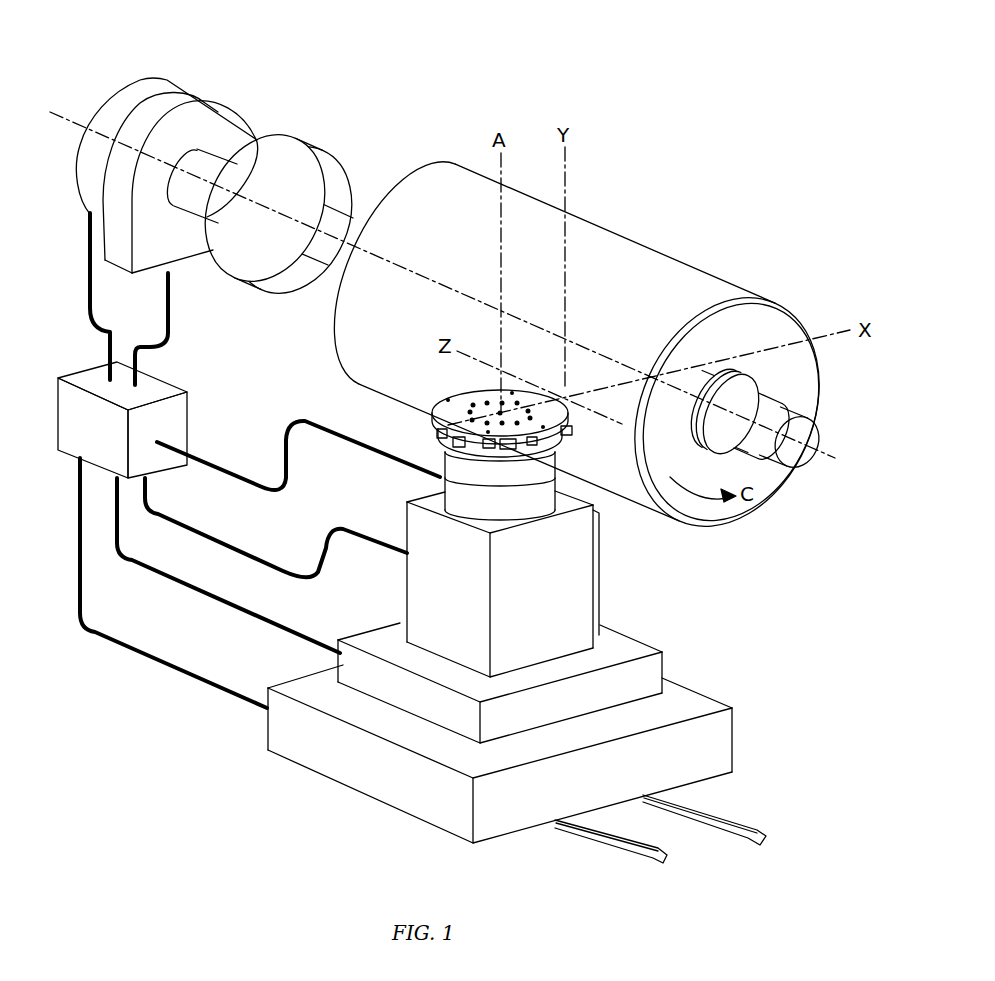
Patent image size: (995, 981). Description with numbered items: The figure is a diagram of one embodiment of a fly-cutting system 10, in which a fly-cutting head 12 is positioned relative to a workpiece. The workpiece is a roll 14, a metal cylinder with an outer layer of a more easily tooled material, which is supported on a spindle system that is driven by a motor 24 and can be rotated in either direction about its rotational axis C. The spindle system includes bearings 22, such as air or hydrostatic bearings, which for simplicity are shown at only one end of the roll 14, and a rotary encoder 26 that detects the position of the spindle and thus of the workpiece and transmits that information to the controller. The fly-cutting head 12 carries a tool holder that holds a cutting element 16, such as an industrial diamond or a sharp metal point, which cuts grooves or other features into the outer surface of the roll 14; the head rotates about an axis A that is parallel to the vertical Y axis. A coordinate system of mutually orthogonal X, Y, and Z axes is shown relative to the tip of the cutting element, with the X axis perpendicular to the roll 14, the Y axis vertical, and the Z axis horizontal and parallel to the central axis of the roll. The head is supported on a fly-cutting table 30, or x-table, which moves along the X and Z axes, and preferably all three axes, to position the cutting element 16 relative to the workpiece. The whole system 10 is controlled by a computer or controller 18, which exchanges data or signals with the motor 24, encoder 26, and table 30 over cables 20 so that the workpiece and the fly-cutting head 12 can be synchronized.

The fly-cutting system 10 is at (406, 88).
The fly-cutting head 12 is at (446, 402).
The roll 14 is at (477, 233).
The cutting element 16 is at (572, 431).
The controller 18 is at (106, 440).
The cables 20 is at (90, 288).
The bearings 22 is at (277, 142).
The motor 24 is at (185, 93).
The rotary encoder 26 is at (147, 82).
The fly-cutting table 30 is at (634, 647).